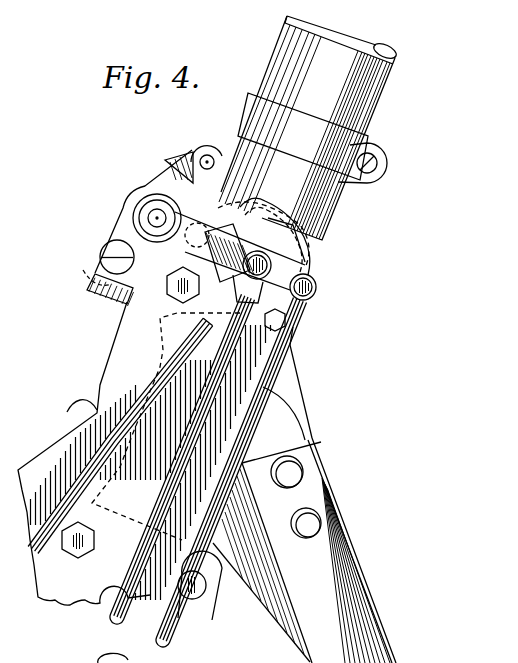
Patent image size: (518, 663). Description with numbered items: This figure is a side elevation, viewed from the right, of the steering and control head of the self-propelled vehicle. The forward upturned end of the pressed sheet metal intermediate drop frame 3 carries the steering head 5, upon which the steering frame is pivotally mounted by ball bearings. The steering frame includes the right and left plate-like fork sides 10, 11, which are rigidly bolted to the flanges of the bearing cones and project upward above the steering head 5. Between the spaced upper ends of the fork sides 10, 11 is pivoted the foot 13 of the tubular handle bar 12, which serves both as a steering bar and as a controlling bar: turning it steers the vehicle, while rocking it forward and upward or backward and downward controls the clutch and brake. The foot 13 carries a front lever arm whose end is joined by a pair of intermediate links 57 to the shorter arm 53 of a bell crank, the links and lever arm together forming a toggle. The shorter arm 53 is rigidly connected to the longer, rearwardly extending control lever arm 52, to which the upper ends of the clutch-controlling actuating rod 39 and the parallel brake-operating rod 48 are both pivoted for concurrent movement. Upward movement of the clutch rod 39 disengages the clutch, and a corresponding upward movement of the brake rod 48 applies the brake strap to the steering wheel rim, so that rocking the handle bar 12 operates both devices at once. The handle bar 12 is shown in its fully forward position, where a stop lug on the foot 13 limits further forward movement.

The intermediate drop frame 3 is at (353, 624).
The steering head 5 is at (160, 368).
The right fork side 10 is at (193, 125).
The left fork side 11 is at (393, 293).
The tubular handle bar 12 is at (373, 108).
The foot of the handle bar 13 is at (320, 238).
The clutch-controlling actuating rod 39 is at (163, 507).
The brake-operating rod 48 is at (218, 511).
The control lever arm 52 is at (302, 266).
The shorter bell crank arm 53 is at (190, 176).
The intermediate links 57 is at (228, 185).